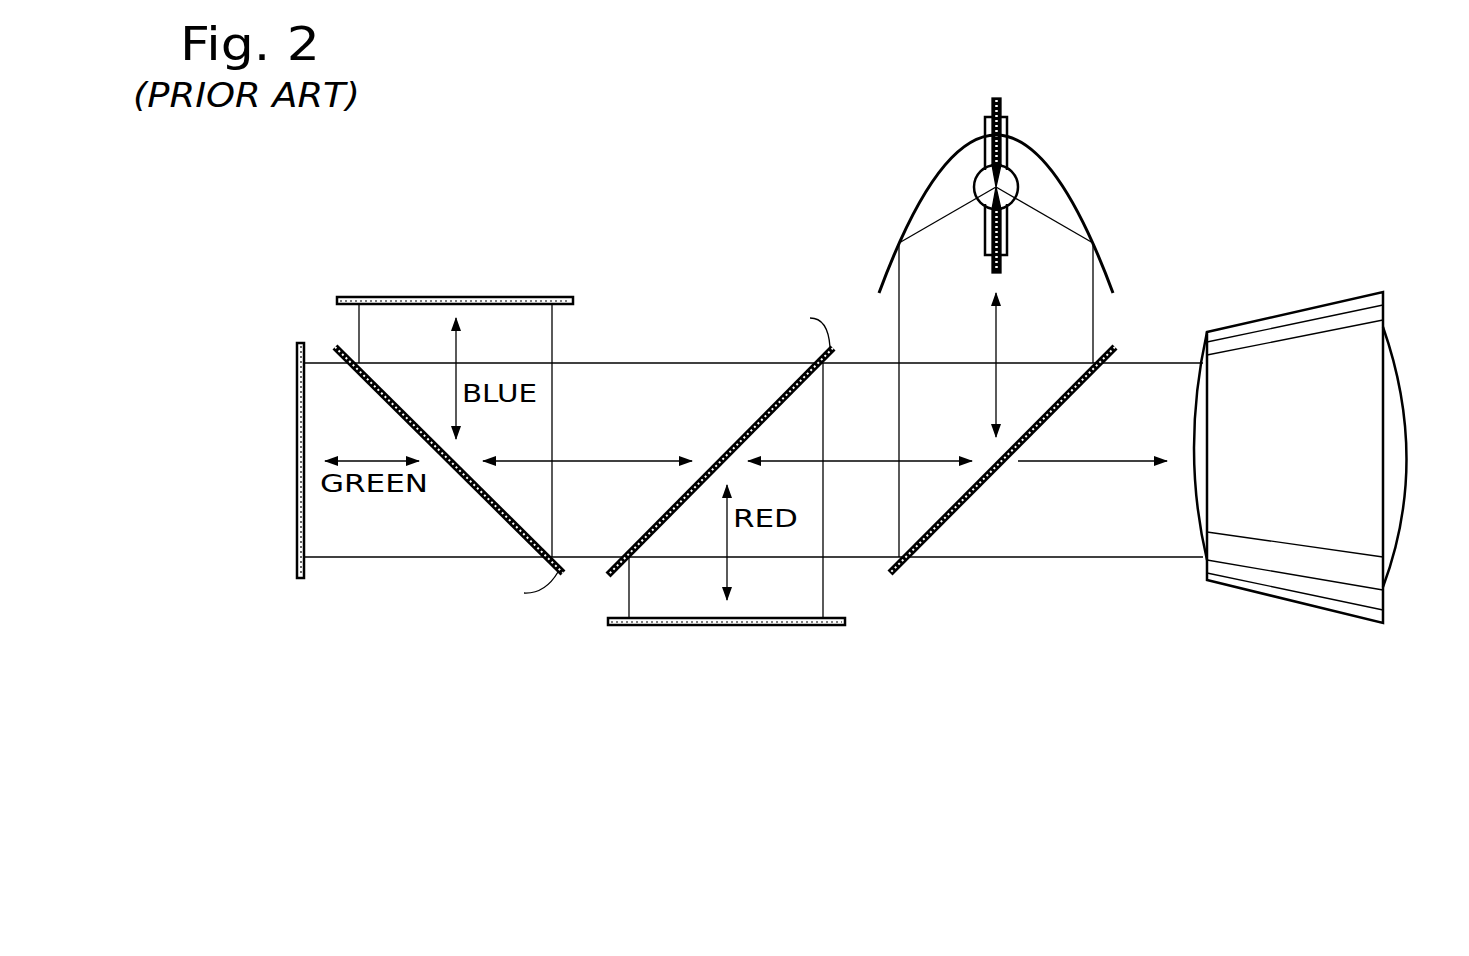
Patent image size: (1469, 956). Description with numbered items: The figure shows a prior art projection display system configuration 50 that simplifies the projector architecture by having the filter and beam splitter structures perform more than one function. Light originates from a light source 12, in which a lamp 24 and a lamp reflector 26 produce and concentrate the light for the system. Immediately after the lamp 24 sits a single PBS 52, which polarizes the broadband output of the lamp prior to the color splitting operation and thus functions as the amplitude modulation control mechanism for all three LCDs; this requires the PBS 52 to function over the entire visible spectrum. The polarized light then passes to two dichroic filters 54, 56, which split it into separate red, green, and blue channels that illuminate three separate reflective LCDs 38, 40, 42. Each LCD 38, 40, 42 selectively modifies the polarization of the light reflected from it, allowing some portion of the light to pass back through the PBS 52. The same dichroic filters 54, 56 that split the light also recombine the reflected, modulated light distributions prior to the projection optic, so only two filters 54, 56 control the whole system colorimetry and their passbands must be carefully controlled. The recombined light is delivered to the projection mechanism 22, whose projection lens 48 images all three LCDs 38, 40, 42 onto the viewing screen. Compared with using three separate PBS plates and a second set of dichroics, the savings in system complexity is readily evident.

The light source 12 is at (1172, 138).
The projection mechanism 22 is at (1331, 471).
The lamp 24 is at (985, 238).
The lamp reflector 26 is at (1058, 172).
The LCD 38 is at (518, 297).
The LCD 40 is at (297, 528).
The LCD 42 is at (658, 627).
The projection lens 48 is at (1415, 492).
The system configuration 50 is at (358, 752).
The single PBS 52 is at (1078, 388).
The dichroic filter 54 is at (487, 494).
The dichroic filter 56 is at (790, 378).